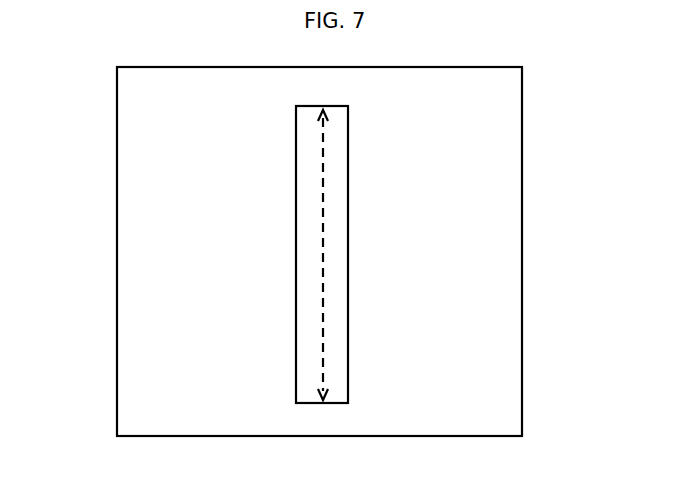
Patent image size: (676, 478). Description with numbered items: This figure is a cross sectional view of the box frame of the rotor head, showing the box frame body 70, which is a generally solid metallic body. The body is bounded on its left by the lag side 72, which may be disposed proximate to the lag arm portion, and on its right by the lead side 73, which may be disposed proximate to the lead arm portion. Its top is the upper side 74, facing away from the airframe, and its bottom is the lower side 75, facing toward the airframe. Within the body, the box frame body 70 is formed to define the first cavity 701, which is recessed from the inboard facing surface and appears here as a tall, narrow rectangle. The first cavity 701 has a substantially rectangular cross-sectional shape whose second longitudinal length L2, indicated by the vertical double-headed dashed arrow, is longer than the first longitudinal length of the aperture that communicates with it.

The box frame body 70 is at (197, 148).
The first cavity 701 is at (296, 355).
The second longitudinal length L2 is at (321, 251).
The lag side 72 is at (117, 255).
The lead side 73 is at (522, 256).
The upper side 74 is at (471, 67).
The lower side 75 is at (492, 436).